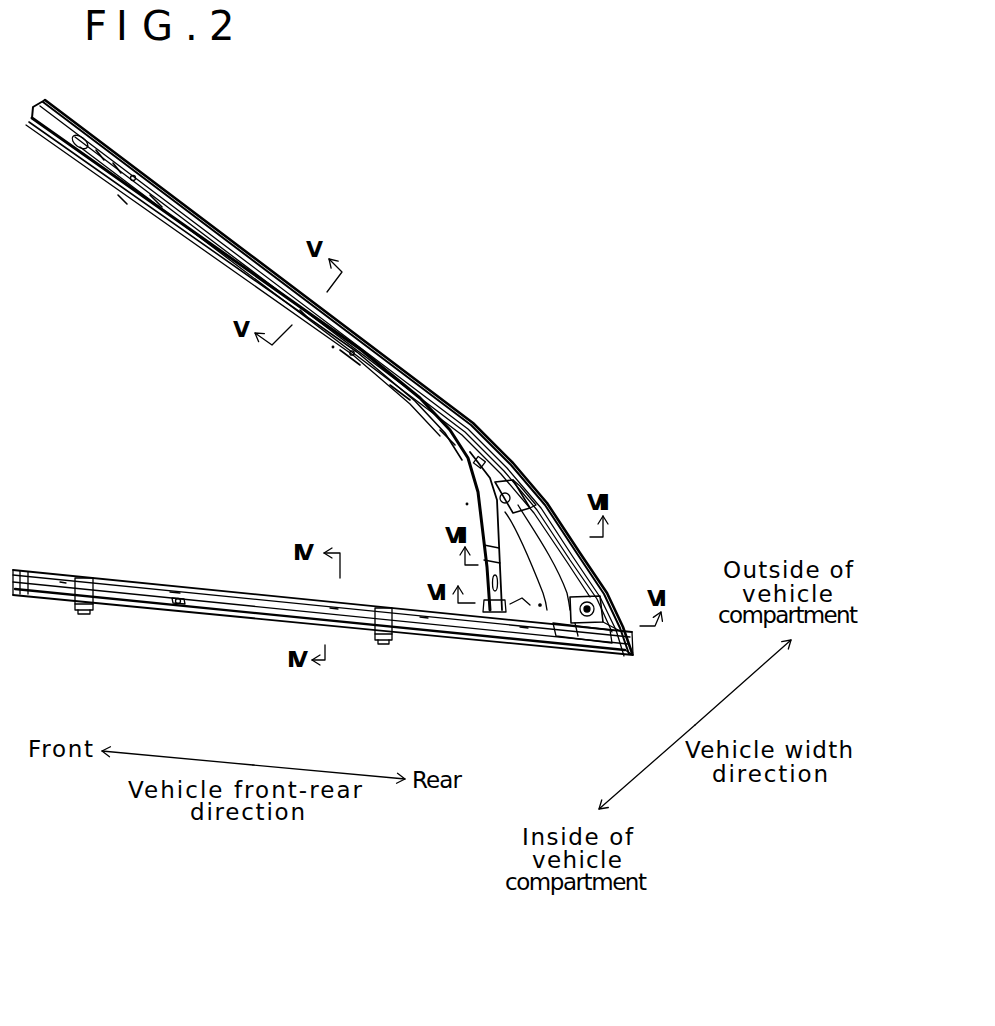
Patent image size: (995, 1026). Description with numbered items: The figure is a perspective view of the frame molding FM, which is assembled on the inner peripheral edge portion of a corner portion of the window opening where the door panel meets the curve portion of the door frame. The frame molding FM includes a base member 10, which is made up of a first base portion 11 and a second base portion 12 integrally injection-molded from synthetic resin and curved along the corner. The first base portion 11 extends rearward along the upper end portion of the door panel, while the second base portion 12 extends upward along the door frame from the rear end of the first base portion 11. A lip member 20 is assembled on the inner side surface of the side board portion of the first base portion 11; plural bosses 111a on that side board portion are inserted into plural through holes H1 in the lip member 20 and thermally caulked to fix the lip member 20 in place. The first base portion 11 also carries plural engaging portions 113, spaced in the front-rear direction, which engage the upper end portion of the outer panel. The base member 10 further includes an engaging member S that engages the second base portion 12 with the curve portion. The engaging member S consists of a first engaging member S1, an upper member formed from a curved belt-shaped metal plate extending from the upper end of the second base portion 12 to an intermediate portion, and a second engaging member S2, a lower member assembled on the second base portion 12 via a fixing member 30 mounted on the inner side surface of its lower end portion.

The frame molding FM is at (303, 151).
The base member 10 is at (410, 347).
The second base portion 12 is at (479, 426).
The first base portion 11 is at (265, 589).
The lip member 20 is at (286, 622).
The fixing member 30 is at (530, 604).
The engaging portion 113 is at (84, 612).
The boss 111a is at (178, 605).
The through hole H1 is at (178, 601).
The engaging member S is at (396, 534).
The first engaging member S1 is at (333, 347).
The second engaging member S2 is at (467, 504).